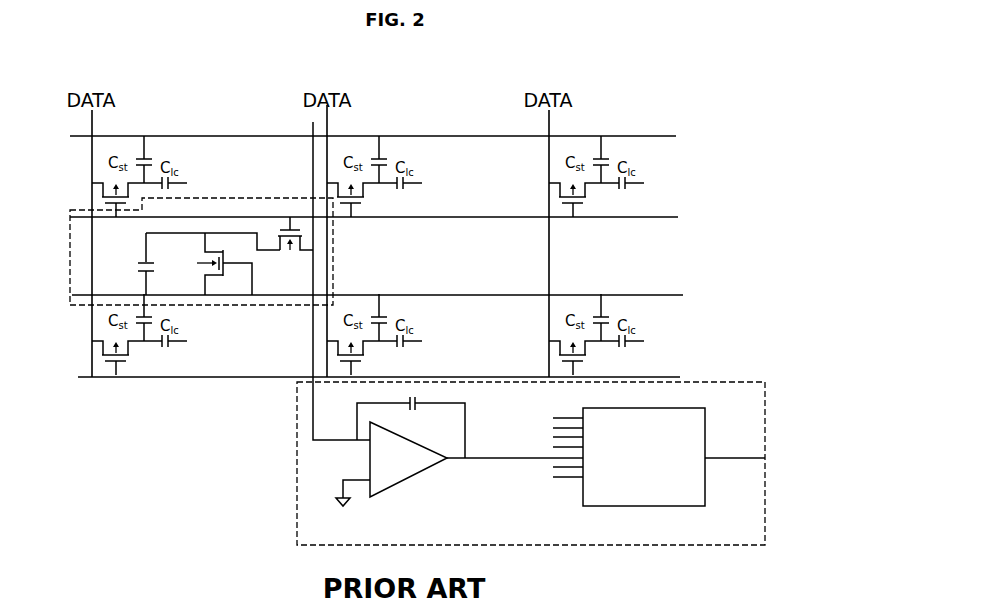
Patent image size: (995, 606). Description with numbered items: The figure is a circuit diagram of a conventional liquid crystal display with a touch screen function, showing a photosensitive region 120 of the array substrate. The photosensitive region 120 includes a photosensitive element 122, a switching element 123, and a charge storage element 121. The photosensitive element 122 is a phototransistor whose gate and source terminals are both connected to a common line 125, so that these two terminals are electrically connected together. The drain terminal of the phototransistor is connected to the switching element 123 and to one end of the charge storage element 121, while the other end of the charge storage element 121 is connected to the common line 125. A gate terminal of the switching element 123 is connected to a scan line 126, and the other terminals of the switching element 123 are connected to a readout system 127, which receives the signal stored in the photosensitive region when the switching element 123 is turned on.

The photosensitive region 120 is at (69, 290).
The charge storage element 121 is at (142, 262).
The photosensitive element 122 is at (197, 263).
The switching element 123 is at (289, 253).
The common line 125 is at (655, 136).
The scan line 126 is at (443, 218).
The readout system 127 is at (297, 485).